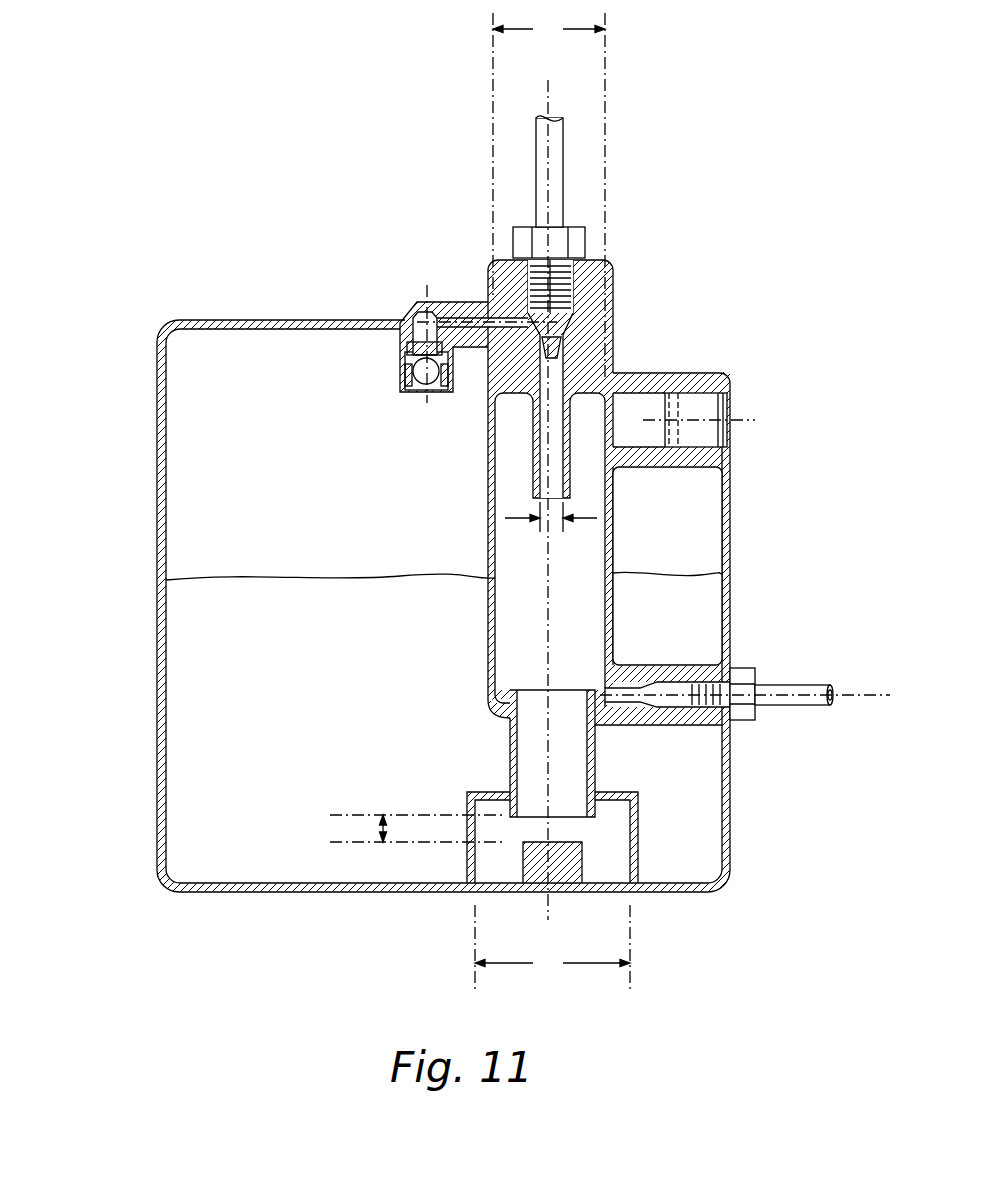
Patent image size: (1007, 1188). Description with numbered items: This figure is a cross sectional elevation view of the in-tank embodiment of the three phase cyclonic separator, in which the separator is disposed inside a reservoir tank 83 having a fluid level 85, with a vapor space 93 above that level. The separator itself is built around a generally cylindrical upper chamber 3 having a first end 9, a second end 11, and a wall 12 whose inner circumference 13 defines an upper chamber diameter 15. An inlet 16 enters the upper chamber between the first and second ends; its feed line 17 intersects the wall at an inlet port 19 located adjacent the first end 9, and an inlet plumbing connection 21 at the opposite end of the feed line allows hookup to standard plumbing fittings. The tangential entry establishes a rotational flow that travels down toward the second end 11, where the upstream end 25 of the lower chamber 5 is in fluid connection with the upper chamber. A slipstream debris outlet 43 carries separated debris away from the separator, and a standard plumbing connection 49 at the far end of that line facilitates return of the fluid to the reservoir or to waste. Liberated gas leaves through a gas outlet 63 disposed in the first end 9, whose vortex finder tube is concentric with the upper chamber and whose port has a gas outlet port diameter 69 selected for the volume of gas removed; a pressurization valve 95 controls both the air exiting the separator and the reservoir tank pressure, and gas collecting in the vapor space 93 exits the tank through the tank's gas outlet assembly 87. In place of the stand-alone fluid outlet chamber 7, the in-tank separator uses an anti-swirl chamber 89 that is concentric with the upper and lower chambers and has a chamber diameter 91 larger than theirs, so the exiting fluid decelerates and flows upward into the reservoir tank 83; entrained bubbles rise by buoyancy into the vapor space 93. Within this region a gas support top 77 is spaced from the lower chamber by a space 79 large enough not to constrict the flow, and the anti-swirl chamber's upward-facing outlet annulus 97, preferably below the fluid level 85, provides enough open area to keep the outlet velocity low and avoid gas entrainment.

The upper chamber 3 is at (518, 560).
The lower chamber 5 is at (525, 746).
The fluid outlet chamber 7 is at (618, 858).
The first end 9 is at (490, 403).
The second end 11 is at (602, 720).
The wall 12 is at (490, 447).
The inner circumference 13 is at (493, 467).
The upper chamber diameter 15 is at (549, 466).
The inlet 16 is at (640, 390).
The feed line 17 is at (652, 408).
The inlet port 19 is at (610, 412).
The inlet plumbing connection 21 is at (703, 407).
The upstream end 25 is at (507, 690).
The slipstream debris outlet 43 is at (603, 690).
The standard plumbing connection 49 is at (757, 715).
The gas outlet 63 is at (532, 485).
The gas outlet port diameter 69 is at (505, 518).
The gas support top 77 is at (533, 842).
The space 79 is at (375, 828).
The reservoir tank 83 is at (157, 613).
The fluid level 85 is at (287, 572).
The gas outlet assembly 87 is at (400, 370).
The anti-swirl chamber 89 is at (640, 838).
The chamber diameter 91 is at (552, 947).
The vapor space 93 is at (213, 373).
The pressurization valve 95 is at (613, 322).
The outlet annulus 97 is at (615, 793).